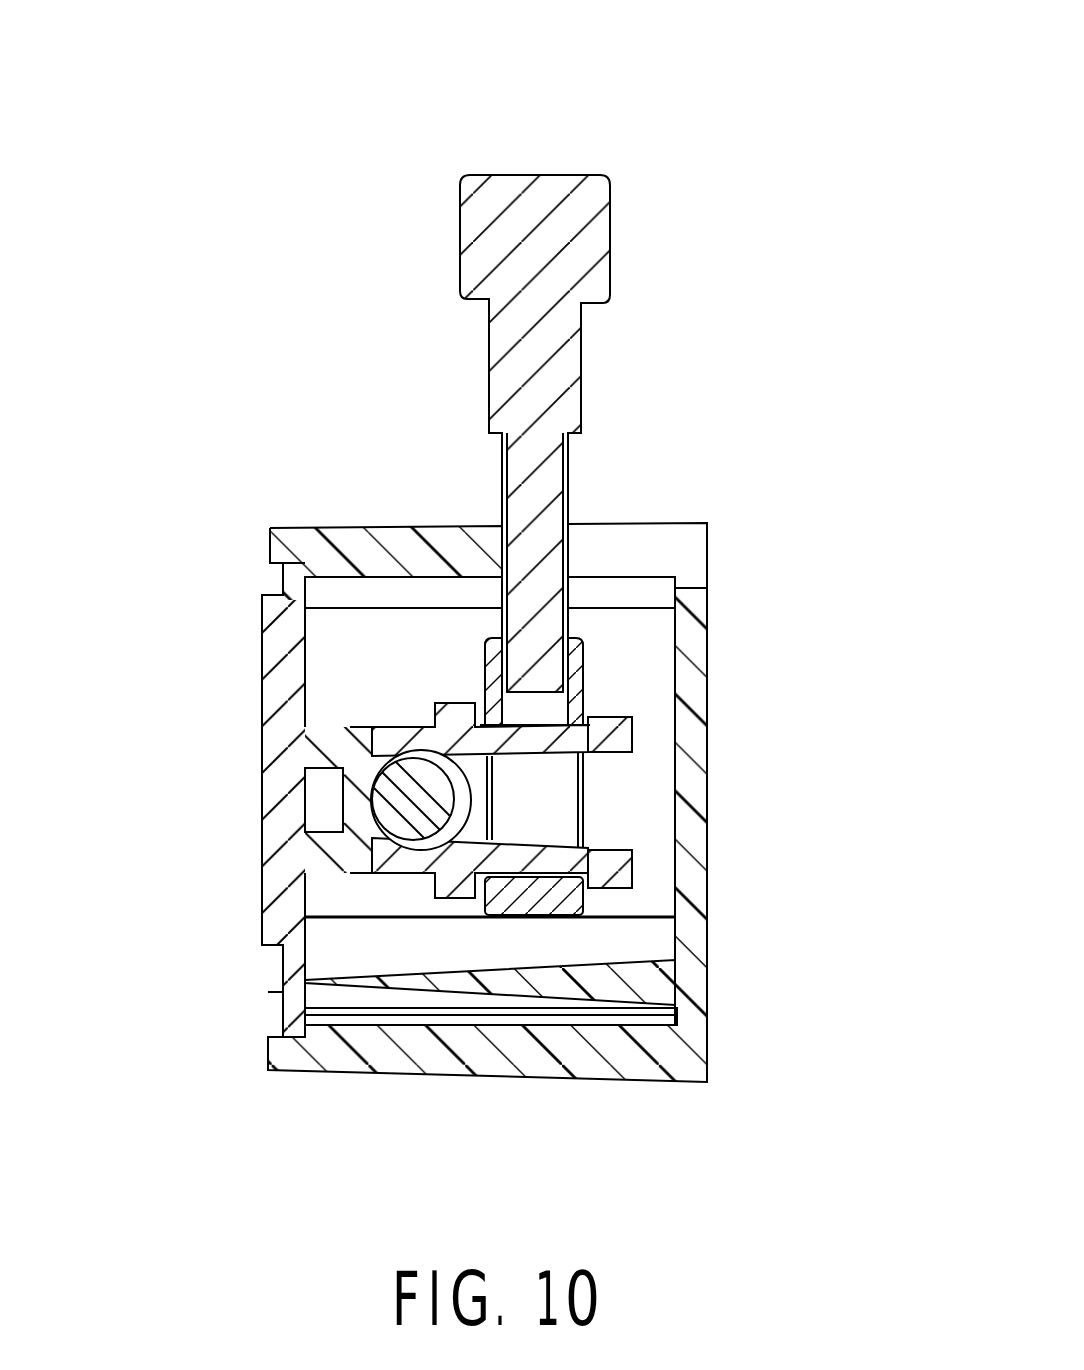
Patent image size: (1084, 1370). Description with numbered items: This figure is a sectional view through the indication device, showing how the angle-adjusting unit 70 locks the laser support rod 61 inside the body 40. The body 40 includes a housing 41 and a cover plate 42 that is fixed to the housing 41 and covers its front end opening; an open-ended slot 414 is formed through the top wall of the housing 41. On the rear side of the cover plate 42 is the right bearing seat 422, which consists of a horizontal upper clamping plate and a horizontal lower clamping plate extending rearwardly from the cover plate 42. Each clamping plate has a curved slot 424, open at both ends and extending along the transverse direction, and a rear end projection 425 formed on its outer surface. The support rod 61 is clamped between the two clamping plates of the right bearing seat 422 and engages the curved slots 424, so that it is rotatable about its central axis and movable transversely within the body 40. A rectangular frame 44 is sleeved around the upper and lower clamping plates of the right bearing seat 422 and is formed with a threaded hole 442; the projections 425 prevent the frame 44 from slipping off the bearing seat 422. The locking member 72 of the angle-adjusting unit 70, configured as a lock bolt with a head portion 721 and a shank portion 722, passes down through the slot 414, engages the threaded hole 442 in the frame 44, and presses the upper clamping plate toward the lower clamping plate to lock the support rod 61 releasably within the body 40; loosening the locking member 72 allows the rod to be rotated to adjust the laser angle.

The angle-adjusting unit 70 is at (570, 146).
The locking member 72 is at (462, 238).
The head portion 721 is at (584, 242).
The shank portion 722 is at (507, 667).
The threaded hole 442 is at (535, 709).
The body 40 is at (742, 742).
The housing 41 is at (710, 881).
The open-ended slot 414 is at (623, 538).
The cover plate 42 is at (270, 634).
The right bearing seat 422 is at (385, 722).
The curved slot 424 is at (393, 752).
The rear end projection 425 is at (613, 713).
The rectangular frame 44 is at (578, 668).
The support rod 61 is at (382, 813).